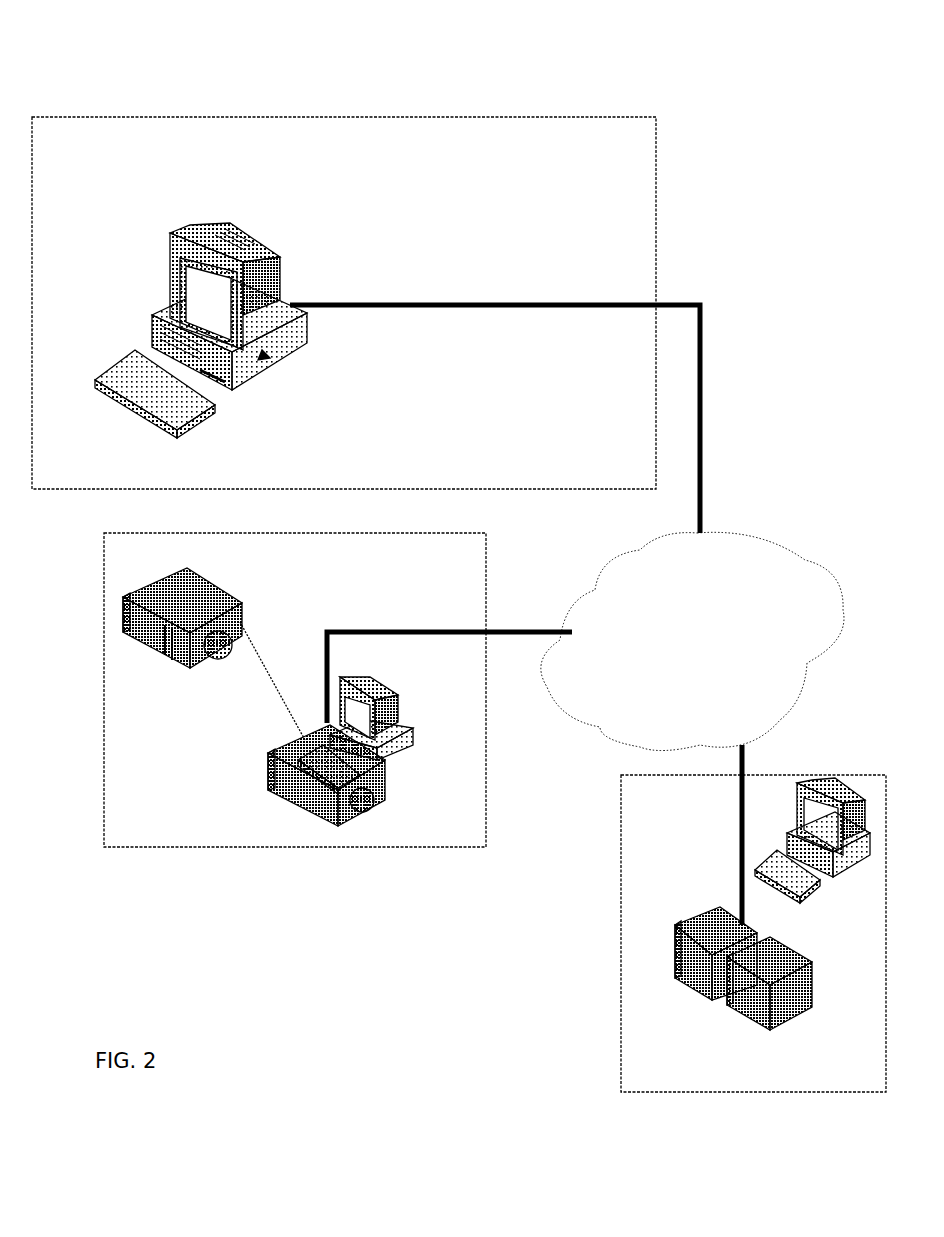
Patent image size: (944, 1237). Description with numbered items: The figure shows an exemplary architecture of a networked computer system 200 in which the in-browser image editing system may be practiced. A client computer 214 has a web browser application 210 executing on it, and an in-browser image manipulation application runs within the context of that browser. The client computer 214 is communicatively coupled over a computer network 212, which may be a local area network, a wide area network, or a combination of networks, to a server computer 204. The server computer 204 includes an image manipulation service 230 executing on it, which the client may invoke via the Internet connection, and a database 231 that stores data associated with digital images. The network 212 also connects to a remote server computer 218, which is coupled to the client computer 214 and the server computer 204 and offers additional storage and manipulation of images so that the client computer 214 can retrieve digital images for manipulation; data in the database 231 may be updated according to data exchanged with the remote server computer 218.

The networked computer system 200 is at (356, 58).
The client computer 214 is at (344, 303).
The web browser application 210 is at (306, 345).
The server computer 204 is at (295, 690).
The image manipulation service 230 is at (243, 603).
The database 231 is at (376, 801).
The computer network 212 is at (692, 641).
The remote server computer 218 is at (753, 933).